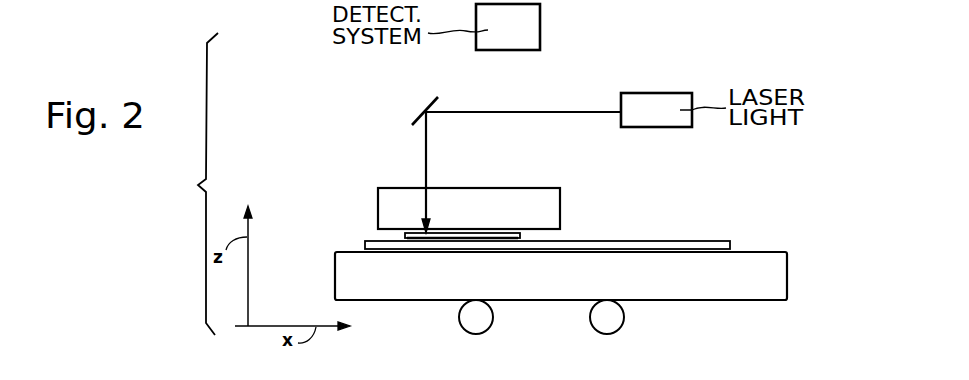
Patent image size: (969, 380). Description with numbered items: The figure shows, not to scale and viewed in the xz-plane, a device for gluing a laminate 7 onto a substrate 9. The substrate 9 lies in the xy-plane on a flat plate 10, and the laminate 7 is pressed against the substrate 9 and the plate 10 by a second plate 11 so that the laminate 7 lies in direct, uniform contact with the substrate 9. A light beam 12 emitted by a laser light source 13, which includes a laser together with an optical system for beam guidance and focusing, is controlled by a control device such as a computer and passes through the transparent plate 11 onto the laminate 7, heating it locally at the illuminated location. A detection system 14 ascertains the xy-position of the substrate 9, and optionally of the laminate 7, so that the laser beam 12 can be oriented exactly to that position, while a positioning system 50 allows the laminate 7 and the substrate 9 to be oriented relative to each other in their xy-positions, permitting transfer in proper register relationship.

The laminate 7 is at (412, 240).
The substrate 9 is at (722, 245).
The flat plate 10 is at (768, 287).
The second plate 11 is at (388, 209).
The light beam 12 is at (424, 154).
The laser light source 13 is at (668, 102).
The detection system 14 is at (527, 23).
The positioning system 50 is at (590, 318).